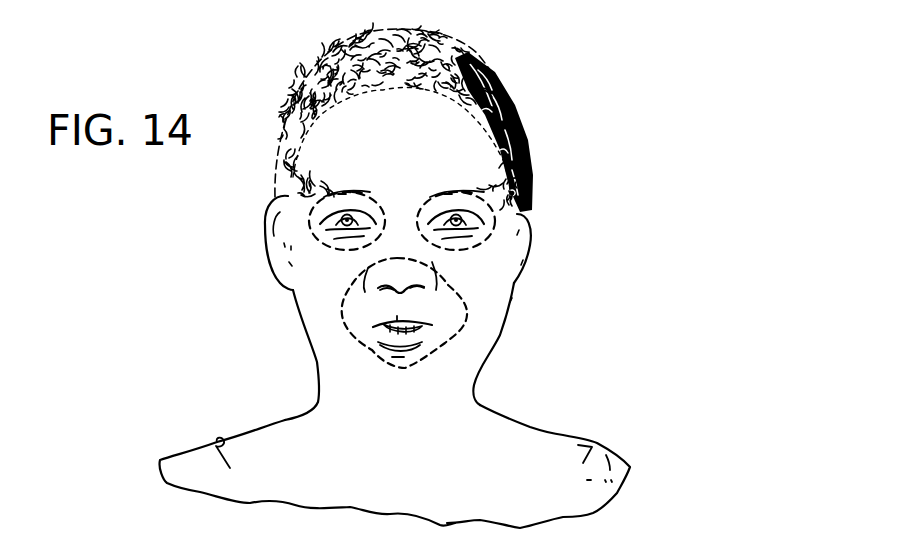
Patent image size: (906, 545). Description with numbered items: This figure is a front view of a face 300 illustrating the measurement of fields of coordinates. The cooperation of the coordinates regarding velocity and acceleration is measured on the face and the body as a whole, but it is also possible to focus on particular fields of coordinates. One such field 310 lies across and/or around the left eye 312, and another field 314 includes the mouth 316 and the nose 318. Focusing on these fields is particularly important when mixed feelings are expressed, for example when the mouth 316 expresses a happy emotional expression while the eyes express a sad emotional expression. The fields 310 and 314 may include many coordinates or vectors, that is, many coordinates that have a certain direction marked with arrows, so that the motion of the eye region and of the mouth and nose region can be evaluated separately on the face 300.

The face of user 300 is at (666, 71).
The field 310 is at (491, 218).
The left eye 312 is at (457, 223).
The field 314 is at (450, 332).
The mouth 316 is at (383, 328).
The nose 318 is at (397, 275).